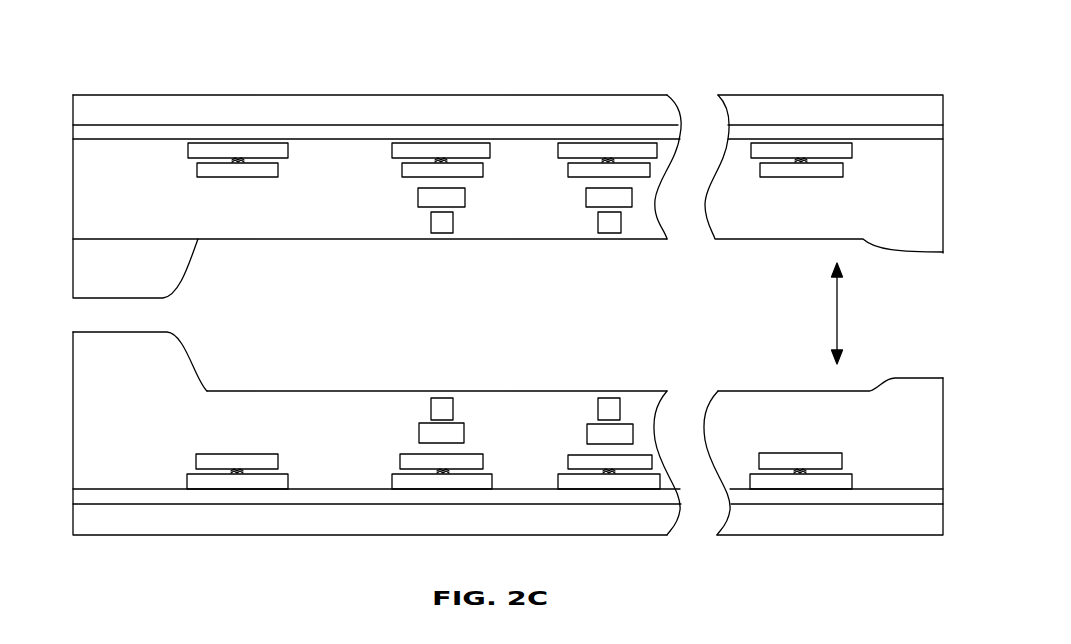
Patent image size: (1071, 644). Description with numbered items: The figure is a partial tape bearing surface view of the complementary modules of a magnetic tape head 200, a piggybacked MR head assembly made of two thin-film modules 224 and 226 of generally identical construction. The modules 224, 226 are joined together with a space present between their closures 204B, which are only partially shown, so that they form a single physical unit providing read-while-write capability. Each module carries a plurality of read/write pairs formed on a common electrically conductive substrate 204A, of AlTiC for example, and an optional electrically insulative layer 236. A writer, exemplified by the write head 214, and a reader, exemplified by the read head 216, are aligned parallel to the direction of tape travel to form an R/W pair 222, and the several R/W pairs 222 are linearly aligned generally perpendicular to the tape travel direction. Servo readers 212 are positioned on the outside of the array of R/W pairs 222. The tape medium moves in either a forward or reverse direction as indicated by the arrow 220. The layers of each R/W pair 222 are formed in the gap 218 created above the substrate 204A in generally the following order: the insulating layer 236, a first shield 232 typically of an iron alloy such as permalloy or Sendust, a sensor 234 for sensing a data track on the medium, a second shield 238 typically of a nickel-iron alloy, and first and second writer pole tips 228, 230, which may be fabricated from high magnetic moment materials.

The magnetic tape head 200 is at (430, 78).
The substrate 204A is at (215, 118).
The closure 204B is at (185, 282).
The servo reader 212 is at (284, 440).
The write head 214 is at (526, 433).
The read head 216 is at (545, 476).
The gap 218 is at (283, 240).
The arrow 220 is at (837, 320).
The R/W pair 222 is at (453, 370).
The thin-film module 224 is at (862, 95).
The thin-film module 226 is at (843, 535).
The first writer pole tip 228 is at (419, 437).
The second writer pole tip 230 is at (431, 405).
The first shield 232 is at (392, 482).
The sensor 234 is at (400, 462).
The electrically insulative layer 236 is at (933, 481).
The second shield 238 is at (389, 460).